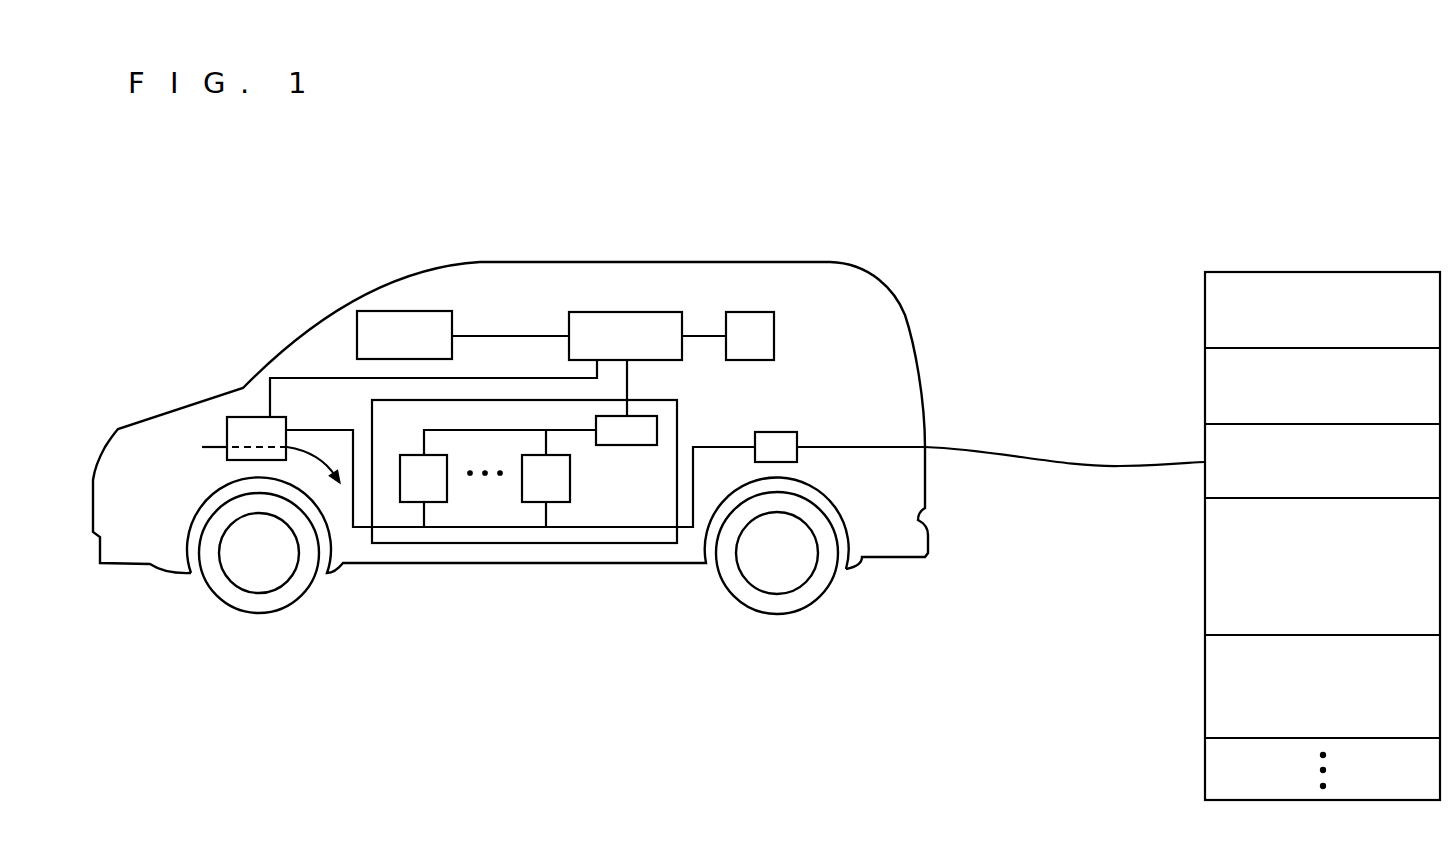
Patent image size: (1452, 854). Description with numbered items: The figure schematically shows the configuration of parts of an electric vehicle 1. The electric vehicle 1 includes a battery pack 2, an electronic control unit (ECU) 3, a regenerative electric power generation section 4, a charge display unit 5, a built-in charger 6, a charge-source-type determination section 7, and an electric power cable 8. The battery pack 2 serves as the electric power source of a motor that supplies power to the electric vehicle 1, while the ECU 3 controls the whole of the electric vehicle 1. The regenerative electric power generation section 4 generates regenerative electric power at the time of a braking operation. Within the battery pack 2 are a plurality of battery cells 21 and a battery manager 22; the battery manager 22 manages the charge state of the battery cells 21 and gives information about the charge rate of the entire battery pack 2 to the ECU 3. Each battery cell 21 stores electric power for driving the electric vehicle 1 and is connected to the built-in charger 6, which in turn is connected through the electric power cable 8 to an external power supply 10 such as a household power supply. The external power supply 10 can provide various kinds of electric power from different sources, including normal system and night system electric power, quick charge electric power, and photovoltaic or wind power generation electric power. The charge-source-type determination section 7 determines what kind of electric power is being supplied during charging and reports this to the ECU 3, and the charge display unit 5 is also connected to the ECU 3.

The electric vehicle 1 is at (233, 290).
The battery pack 2 is at (585, 543).
The electronic control unit (ECU) 3 is at (627, 312).
The regenerative electric power generation section 4 is at (240, 417).
The charge display unit 5 is at (424, 311).
The built-in charger 6 is at (773, 432).
The charge-source-type determination section 7 is at (774, 336).
The electric power cable 8 is at (1018, 450).
The external power supply 10 is at (1323, 272).
The battery cells 21 is at (437, 502).
The battery manager 22 is at (657, 421).